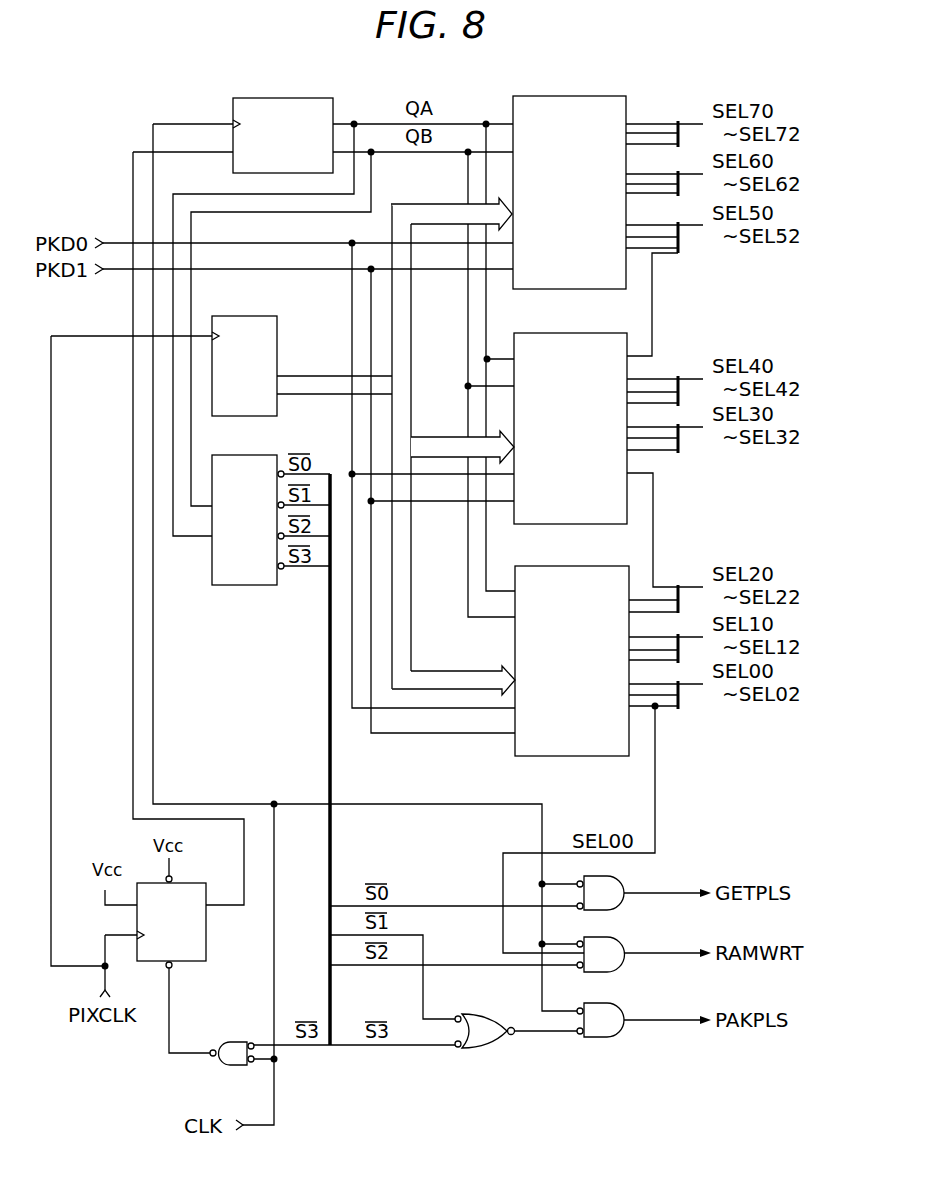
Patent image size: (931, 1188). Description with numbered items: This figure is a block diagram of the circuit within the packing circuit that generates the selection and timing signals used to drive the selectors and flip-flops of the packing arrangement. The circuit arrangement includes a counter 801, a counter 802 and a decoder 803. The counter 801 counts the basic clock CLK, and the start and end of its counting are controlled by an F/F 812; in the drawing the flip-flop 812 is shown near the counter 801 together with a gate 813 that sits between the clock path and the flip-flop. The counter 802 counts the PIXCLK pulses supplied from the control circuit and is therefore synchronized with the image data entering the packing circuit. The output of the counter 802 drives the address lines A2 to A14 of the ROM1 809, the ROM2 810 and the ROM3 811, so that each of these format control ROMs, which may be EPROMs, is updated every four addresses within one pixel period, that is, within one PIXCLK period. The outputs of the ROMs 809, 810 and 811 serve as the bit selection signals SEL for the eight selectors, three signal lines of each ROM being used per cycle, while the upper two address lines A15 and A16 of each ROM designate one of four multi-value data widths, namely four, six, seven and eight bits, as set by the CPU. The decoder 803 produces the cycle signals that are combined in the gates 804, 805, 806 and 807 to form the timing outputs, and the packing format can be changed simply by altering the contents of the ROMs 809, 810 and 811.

The counter 801 is at (318, 98).
The counter 802 is at (248, 316).
The decoder 803 is at (262, 455).
The NOR gate 804 is at (488, 1020).
The AND gate 805 is at (628, 887).
The AND gate 806 is at (626, 950).
The AND gate 807 is at (626, 1016).
The ROM1 809 is at (600, 96).
The ROM2 810 is at (585, 333).
The ROM3 811 is at (580, 566).
The F/F 812 is at (207, 938).
The NAND gate 813 is at (236, 1042).